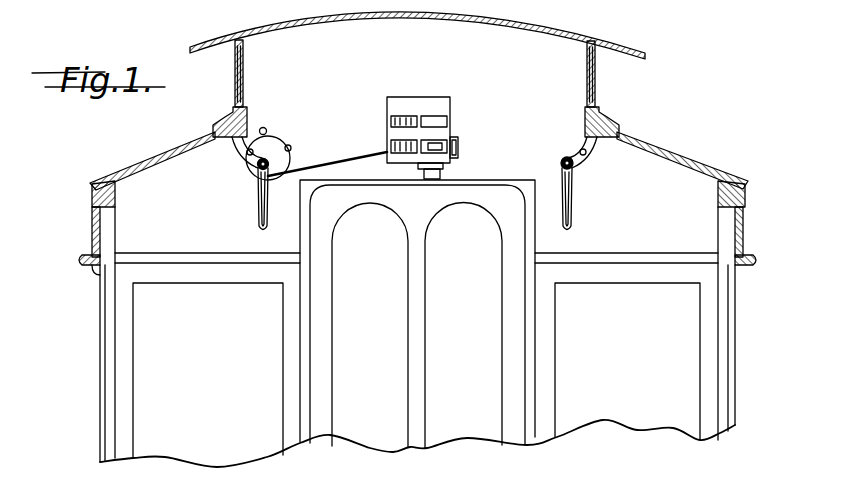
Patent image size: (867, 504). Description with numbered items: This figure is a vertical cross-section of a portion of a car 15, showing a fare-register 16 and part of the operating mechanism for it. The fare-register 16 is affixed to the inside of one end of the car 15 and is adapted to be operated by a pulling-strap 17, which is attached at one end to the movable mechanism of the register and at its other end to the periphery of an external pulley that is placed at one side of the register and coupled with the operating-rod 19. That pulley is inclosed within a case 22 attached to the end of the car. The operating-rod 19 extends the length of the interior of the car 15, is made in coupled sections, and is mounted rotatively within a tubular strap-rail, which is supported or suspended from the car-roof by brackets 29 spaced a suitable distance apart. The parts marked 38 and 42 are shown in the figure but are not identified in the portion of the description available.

The car 15 is at (417, 326).
The fare-register 16 is at (436, 107).
The pulling-strap 17 is at (328, 163).
The operating-rod 19 is at (259, 168).
The case 22 is at (282, 161).
The brackets 29 is at (247, 156).
The lug 38 is at (267, 132).
The pendant lever 42 is at (260, 215).